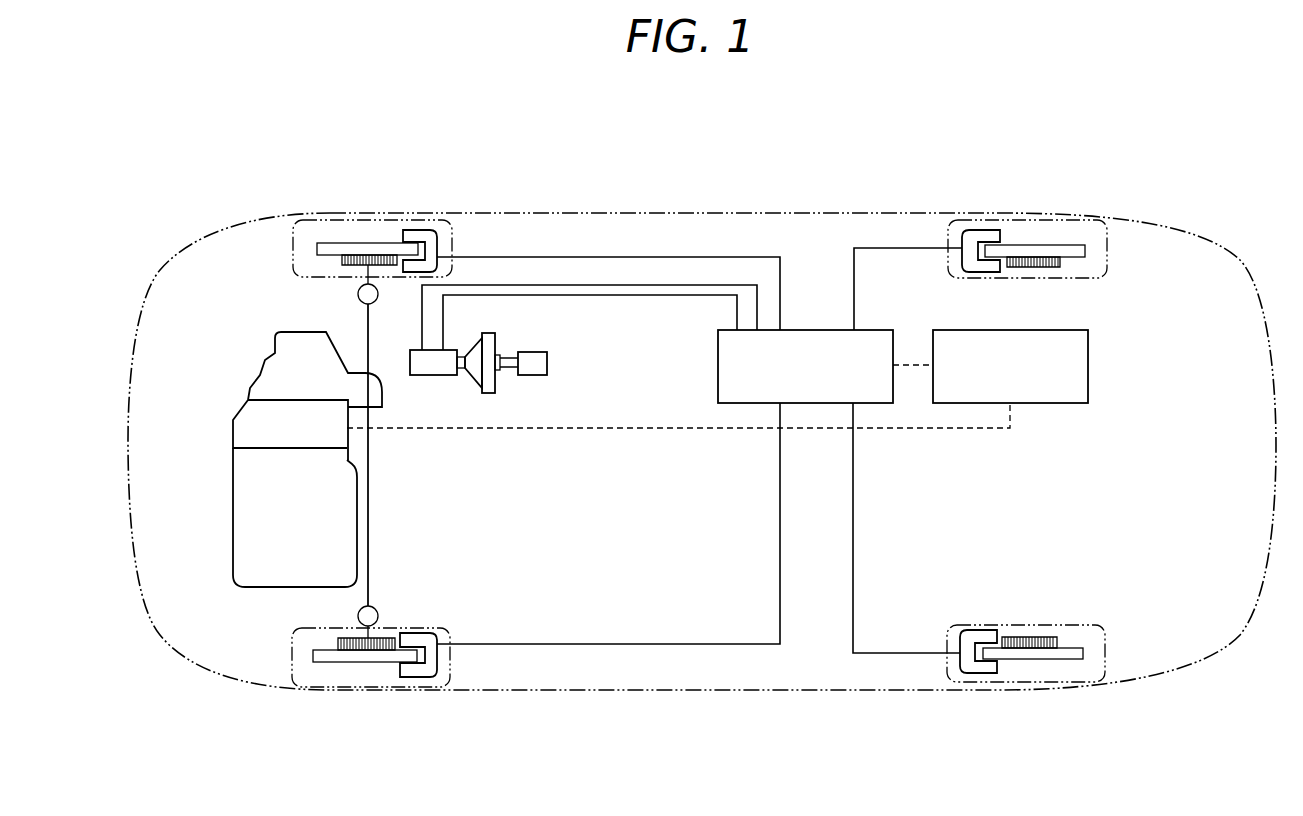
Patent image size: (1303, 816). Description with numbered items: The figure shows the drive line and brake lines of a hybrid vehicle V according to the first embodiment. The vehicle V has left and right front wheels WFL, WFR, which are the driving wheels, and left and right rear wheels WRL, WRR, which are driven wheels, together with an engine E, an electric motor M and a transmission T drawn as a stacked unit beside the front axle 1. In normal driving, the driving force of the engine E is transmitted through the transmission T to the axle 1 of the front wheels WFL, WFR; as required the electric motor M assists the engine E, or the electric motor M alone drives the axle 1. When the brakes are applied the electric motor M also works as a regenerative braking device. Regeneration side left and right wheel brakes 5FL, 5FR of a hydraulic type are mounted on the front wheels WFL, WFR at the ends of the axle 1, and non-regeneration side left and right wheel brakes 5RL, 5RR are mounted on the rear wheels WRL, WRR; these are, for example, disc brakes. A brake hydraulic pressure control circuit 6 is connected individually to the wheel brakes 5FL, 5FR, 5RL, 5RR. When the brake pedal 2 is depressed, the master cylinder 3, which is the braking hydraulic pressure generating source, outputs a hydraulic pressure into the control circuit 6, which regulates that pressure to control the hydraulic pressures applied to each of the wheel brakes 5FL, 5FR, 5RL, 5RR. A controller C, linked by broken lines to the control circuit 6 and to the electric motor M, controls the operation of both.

The vehicle V is at (691, 183).
The axle 1 is at (370, 516).
The brake pedal 2 is at (539, 352).
The master cylinder 3 is at (454, 350).
The brake hydraulic pressure control circuit 6 is at (795, 381).
The controller C is at (999, 381).
The transmission T is at (289, 377).
The electric motor M is at (282, 437).
The engine E is at (284, 540).
The right front wheel WFR is at (326, 219).
The left front wheel WFL is at (323, 688).
The right rear wheel WRR is at (1070, 219).
The left rear wheel WRL is at (1062, 683).
The regeneration side right wheel brake 5FR is at (430, 220).
The regeneration side left wheel brake 5FL is at (420, 687).
The non-regeneration side right wheel brake 5RR is at (970, 222).
The non-regeneration side left wheel brake 5RL is at (970, 685).